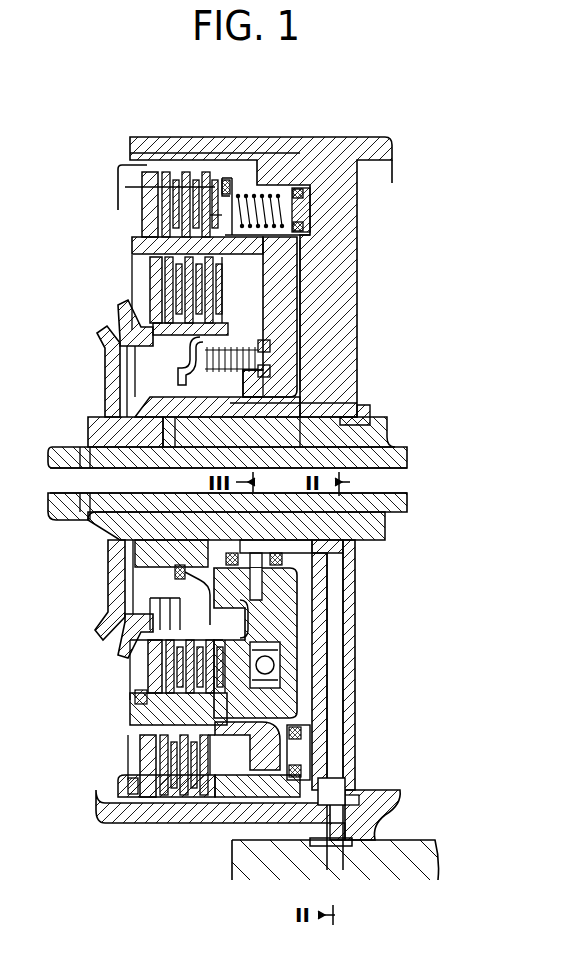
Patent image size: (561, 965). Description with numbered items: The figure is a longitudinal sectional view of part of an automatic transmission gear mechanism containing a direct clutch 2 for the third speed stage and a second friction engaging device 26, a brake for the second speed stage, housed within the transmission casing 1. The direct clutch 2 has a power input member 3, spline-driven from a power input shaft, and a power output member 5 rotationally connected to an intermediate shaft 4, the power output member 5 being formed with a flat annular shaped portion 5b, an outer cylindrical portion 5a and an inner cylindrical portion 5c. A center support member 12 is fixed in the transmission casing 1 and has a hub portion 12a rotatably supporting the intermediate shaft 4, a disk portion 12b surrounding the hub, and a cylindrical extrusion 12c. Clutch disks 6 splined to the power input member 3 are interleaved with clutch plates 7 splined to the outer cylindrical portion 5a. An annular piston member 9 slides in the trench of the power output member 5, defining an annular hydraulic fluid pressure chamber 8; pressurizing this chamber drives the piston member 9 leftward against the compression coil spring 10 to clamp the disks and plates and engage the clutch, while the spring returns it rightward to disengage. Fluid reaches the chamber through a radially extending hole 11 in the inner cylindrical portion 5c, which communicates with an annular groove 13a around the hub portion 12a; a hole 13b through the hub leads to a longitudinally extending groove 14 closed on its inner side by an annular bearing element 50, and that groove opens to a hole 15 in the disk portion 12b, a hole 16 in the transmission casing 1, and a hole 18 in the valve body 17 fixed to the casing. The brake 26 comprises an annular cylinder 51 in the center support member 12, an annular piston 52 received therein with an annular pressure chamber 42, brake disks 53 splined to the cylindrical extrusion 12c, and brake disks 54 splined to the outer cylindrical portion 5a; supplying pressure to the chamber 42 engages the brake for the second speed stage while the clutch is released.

The transmission casing 1 is at (128, 822).
The direct clutch 2 is at (302, 285).
The power input member 3 is at (118, 318).
The intermediate shaft 4 is at (375, 440).
The power output member 5 is at (131, 247).
The outer cylindrical portion 5a is at (141, 233).
The flat annular shaped portion 5b is at (283, 315).
The inner cylindrical portion 5c is at (258, 390).
The clutch disks 6 is at (172, 298).
The clutch plates 7 is at (176, 336).
The annular hydraulic fluid pressure chamber 8 is at (292, 605).
The annular piston member 9 is at (274, 665).
The compression coil spring 10 is at (188, 372).
The radially extending hole 11 is at (205, 605).
The center support member 12 is at (348, 600).
The hub portion 12a is at (328, 560).
The disk portion 12b is at (349, 646).
The cylindrical extrusion 12c is at (118, 168).
The annular groove 13a is at (186, 575).
The hole 13b is at (258, 565).
The longitudinally extending groove 14 is at (330, 548).
The hole 15 is at (333, 706).
The hole 16 is at (372, 818).
The valve body 17 is at (438, 860).
The hole 18 is at (335, 870).
The second friction engaging device 26 is at (138, 752).
The annular pressure chamber 42 is at (312, 765).
The annular bearing element 50 is at (352, 417).
The annular cylinder 51 is at (250, 790).
The annular piston 52 is at (235, 735).
The brake disks 53 is at (186, 175).
The brake disks 54 is at (214, 182).